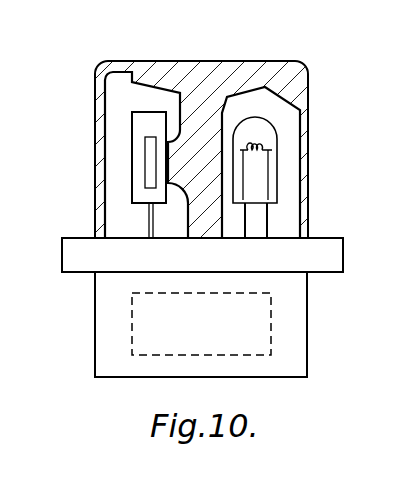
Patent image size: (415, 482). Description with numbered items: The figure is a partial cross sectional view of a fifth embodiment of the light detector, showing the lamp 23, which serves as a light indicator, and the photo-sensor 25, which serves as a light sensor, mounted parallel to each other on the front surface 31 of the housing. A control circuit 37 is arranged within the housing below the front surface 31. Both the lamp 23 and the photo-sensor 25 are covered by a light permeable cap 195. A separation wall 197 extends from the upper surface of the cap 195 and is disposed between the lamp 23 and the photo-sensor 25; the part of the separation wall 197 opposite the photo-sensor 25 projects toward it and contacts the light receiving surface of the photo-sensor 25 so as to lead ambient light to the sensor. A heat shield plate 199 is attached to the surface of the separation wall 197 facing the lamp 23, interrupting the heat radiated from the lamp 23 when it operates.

The lamp 23 is at (277, 165).
The photo-sensor 25 is at (130, 168).
The front surface 31 is at (343, 252).
The control circuit 37 is at (270, 320).
The light permeable cap 195 is at (295, 63).
The separation wall 197 is at (202, 62).
The heat shield plate 199 is at (222, 226).